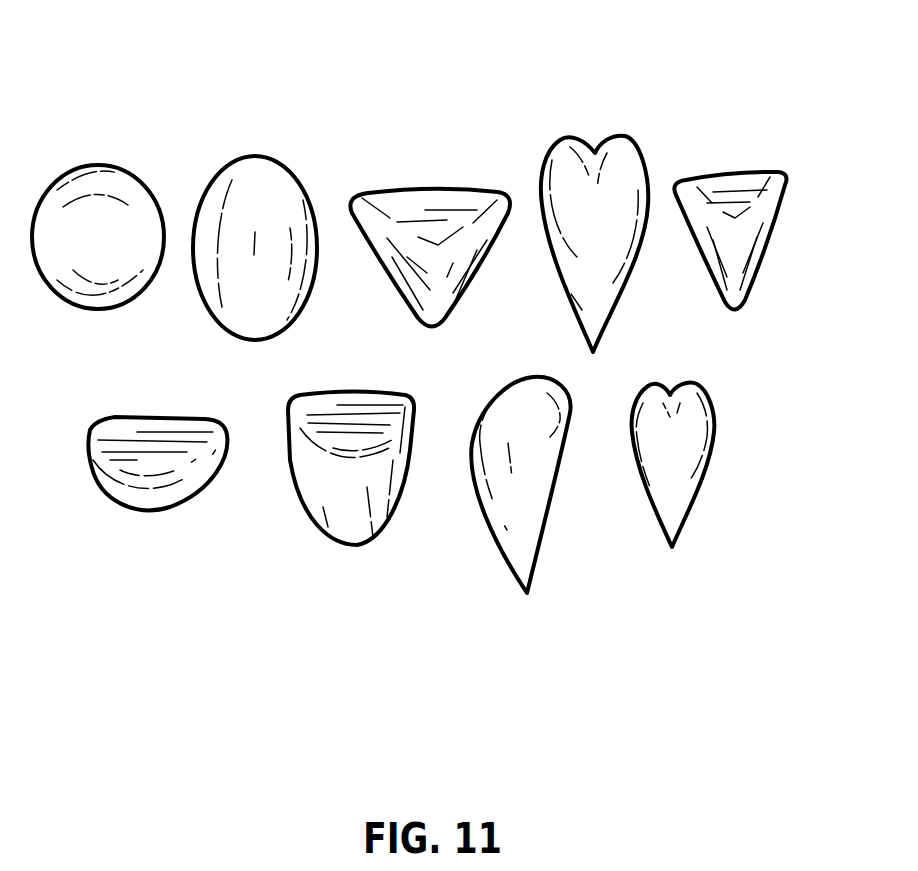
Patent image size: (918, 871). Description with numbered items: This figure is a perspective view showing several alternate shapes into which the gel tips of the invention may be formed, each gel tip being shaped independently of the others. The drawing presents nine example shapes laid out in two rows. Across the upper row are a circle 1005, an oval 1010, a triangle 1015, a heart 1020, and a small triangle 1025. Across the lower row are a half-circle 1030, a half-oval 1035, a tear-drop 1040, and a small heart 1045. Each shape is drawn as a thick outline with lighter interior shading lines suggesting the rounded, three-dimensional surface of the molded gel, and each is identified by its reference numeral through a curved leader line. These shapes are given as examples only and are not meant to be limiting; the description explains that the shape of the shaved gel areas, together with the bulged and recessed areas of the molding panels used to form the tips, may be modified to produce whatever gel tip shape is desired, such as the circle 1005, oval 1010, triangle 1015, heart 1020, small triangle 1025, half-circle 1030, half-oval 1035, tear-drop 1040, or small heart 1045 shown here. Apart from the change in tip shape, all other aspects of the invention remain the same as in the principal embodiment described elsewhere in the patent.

The circle 1005 is at (92, 190).
The oval 1010 is at (257, 190).
The triangle 1015 is at (397, 192).
The heart 1020 is at (613, 130).
The small triangle 1025 is at (702, 175).
The half-circle 1030 is at (187, 517).
The half-oval 1035 is at (357, 545).
The tear-drop 1040 is at (537, 530).
The small heart 1045 is at (700, 492).